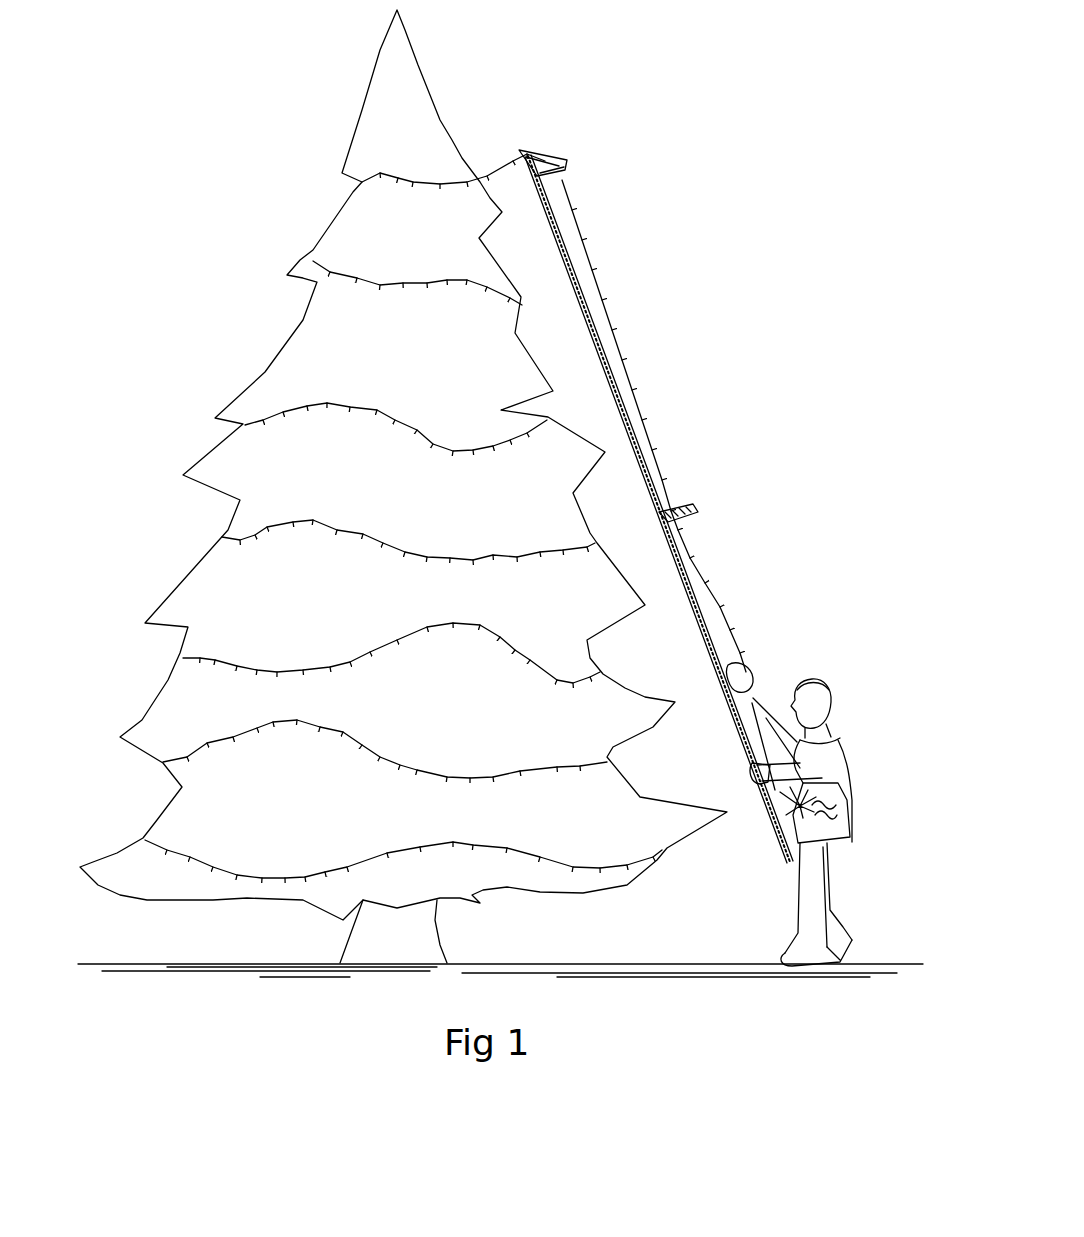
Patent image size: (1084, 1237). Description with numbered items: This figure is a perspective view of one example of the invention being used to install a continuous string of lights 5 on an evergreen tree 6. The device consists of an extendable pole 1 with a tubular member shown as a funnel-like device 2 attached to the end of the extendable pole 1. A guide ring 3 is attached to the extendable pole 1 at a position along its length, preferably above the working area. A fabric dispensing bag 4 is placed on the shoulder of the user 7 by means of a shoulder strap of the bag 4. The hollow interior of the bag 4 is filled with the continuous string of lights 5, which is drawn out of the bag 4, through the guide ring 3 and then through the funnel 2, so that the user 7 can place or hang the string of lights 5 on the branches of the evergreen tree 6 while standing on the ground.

The extendable pole 1 is at (658, 500).
The tubular member 2 is at (540, 157).
The guide ring 3 is at (691, 507).
The fabric dispensing bag 4 is at (833, 820).
The string of lights 5 is at (420, 437).
The evergreen tree 6 is at (410, 68).
The user 7 is at (825, 697).